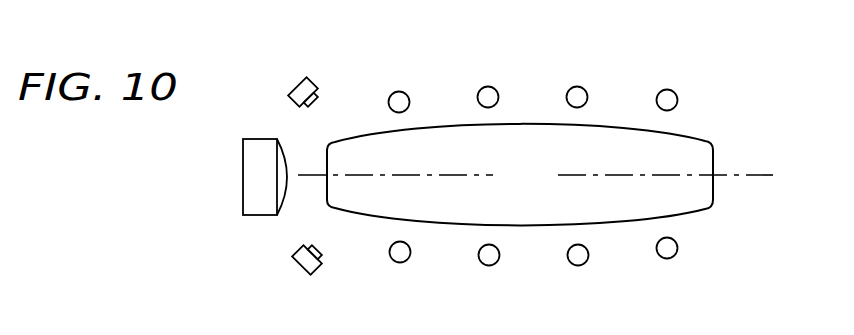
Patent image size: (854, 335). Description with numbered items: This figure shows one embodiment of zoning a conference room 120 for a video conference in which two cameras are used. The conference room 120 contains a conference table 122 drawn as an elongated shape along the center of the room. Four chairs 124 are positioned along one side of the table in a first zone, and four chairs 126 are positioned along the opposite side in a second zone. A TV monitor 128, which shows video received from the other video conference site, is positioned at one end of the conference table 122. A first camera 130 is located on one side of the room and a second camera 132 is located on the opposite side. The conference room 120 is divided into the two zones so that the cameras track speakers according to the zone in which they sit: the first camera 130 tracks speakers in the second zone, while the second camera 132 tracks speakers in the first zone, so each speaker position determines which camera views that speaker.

The conference room 120 is at (636, 62).
The conference table 122 is at (548, 187).
The chairs 124 is at (405, 92).
The chairs 126 is at (672, 258).
The TV monitor 128 is at (243, 152).
The first camera 130 is at (291, 92).
The second camera 132 is at (293, 265).